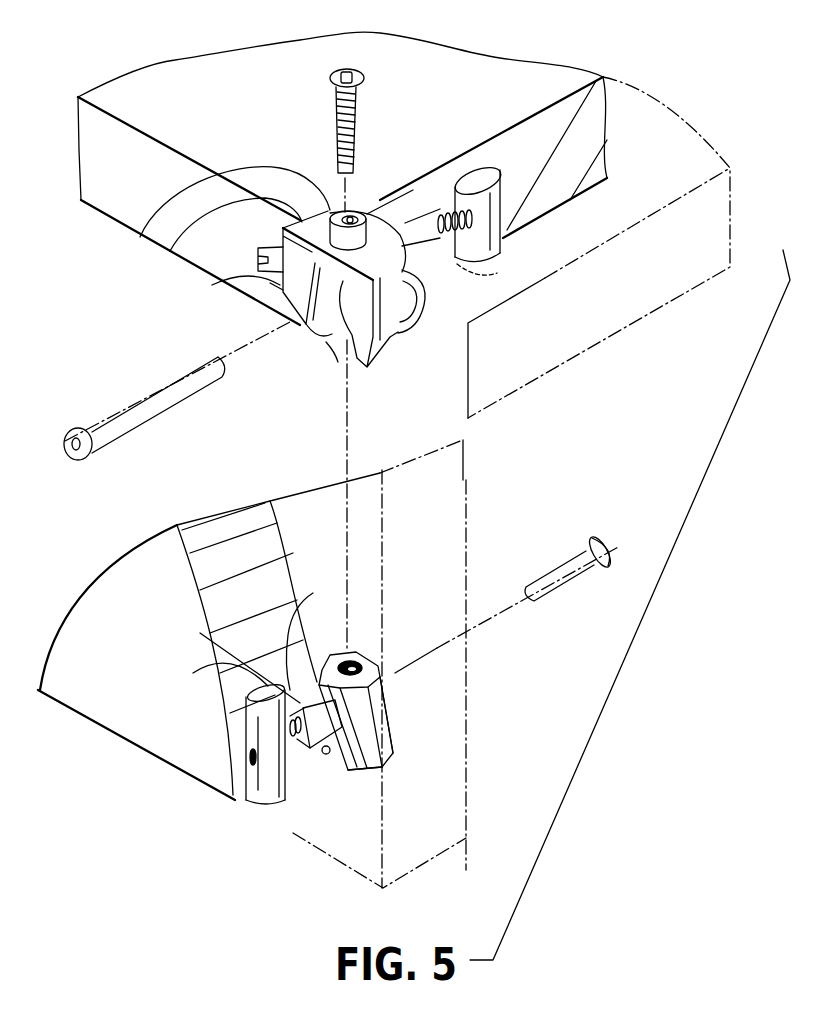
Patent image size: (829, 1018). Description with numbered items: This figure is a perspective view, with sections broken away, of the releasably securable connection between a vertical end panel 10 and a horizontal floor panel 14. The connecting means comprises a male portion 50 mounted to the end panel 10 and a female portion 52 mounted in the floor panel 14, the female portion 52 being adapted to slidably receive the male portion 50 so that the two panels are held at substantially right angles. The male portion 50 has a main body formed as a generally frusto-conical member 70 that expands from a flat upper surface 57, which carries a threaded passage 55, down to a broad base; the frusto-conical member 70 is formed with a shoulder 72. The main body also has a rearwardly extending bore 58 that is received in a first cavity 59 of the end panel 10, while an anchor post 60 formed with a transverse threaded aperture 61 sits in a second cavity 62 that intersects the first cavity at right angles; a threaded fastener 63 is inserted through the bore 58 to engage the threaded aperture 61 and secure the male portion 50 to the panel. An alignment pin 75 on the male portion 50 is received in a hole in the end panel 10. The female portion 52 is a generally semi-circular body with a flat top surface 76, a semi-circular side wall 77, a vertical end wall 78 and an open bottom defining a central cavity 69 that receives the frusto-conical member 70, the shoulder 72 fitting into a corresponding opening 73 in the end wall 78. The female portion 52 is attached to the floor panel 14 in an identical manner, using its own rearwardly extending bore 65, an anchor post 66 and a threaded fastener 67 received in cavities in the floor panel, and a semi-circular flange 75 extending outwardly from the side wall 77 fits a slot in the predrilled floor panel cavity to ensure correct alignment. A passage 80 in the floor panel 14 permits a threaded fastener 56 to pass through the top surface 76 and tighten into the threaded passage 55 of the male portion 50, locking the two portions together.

The end panel 10 is at (135, 615).
The floor panel 14 is at (177, 87).
The male portion 50 is at (367, 701).
The female portion 52 is at (367, 347).
The passage 55 is at (355, 655).
The threaded fastener 56 is at (357, 117).
The flat upper surface 57 is at (375, 672).
The bore 58 is at (327, 754).
The first cavity 59 is at (266, 636).
The anchor post 60 is at (283, 800).
The threaded aperture 61 is at (258, 825).
The second cavity 62 is at (214, 684).
The threaded fastener 63 is at (557, 568).
The bore 65 is at (443, 270).
The anchor post 66 is at (505, 238).
The threaded fastener 67 is at (142, 392).
The central cavity 69 is at (323, 343).
The frusto-conical member 70 is at (395, 740).
The shoulder 72 is at (380, 768).
The opening 73 is at (287, 323).
The alignment pin / semi-circular flange 75 is at (400, 327).
The flat top surface 76 is at (173, 254).
The semi-circular side wall 77 is at (213, 286).
The vertical end wall 78 is at (347, 333).
The passage 80 is at (147, 234).